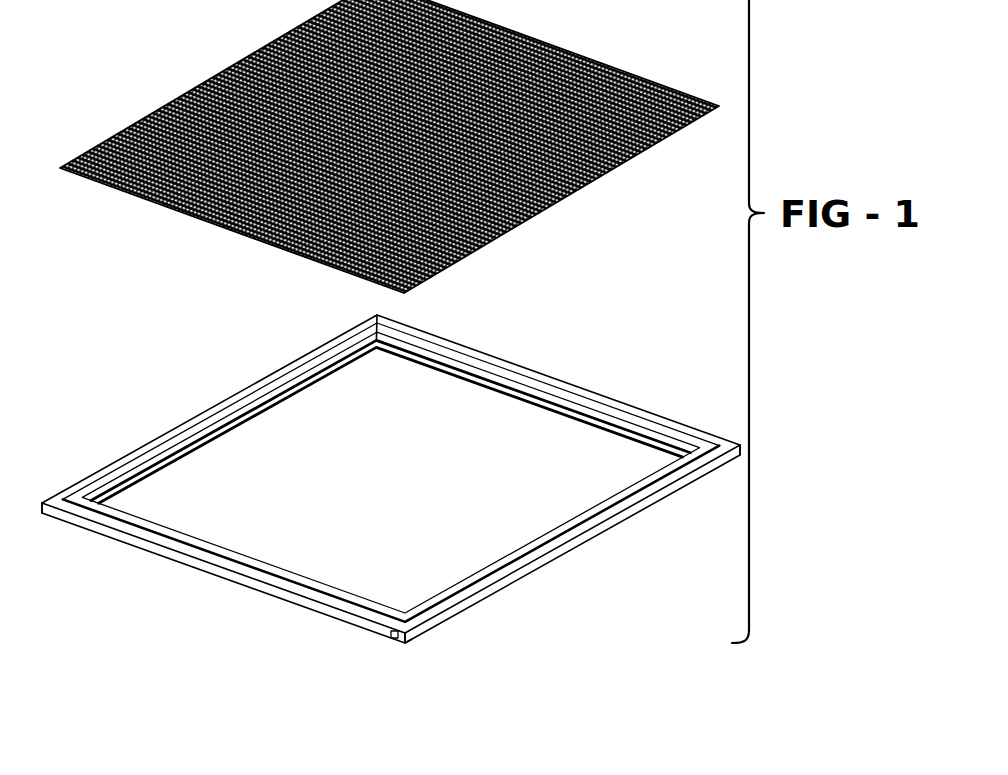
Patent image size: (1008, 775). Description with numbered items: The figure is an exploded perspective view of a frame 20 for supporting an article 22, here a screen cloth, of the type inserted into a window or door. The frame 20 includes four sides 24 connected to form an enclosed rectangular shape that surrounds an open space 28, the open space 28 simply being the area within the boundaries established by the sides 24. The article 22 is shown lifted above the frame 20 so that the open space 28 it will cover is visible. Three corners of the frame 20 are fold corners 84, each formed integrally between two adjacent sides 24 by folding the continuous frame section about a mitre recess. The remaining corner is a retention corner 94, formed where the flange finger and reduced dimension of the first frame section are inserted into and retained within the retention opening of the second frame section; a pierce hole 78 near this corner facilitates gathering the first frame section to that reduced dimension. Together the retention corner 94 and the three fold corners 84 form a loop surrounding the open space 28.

The frame 20 is at (124, 447).
The article 22 is at (216, 72).
The sides 24 is at (540, 373).
The open space 28 is at (330, 425).
The pierce hole 78 is at (393, 639).
The fold corner 84 is at (382, 316).
The retention corner 94 is at (409, 646).